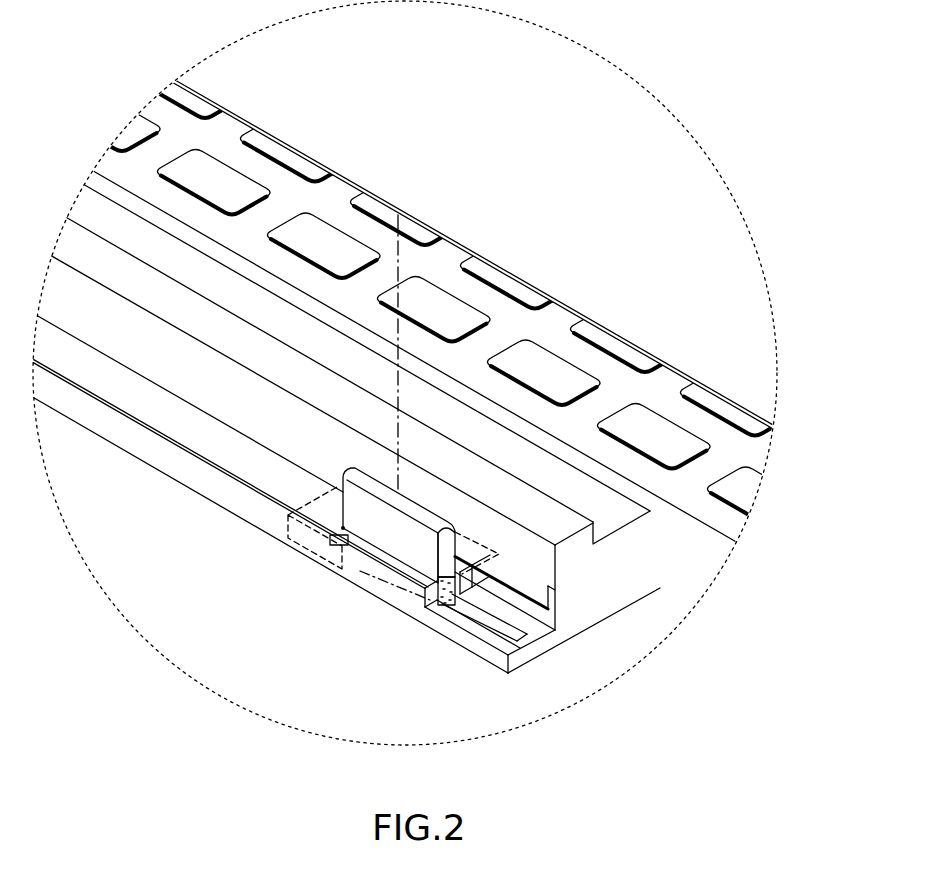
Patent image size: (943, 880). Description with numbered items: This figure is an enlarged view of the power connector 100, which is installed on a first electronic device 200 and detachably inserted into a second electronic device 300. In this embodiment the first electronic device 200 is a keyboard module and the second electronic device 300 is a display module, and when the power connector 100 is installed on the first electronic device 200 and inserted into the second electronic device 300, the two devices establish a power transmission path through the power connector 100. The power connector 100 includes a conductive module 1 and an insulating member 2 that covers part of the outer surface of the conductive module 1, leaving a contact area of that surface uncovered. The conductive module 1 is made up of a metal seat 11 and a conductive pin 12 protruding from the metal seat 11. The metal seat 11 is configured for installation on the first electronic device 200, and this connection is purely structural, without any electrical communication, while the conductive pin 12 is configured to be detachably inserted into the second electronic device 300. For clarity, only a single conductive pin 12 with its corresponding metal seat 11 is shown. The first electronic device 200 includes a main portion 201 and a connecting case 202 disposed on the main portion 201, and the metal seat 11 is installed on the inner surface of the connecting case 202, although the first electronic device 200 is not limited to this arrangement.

The second electronic device 300 is at (230, 76).
The first electronic device 200 is at (422, 440).
The main portion 201 is at (655, 598).
The connecting case 202 is at (540, 652).
The power connector 100 is at (380, 586).
The conductive module 1 is at (380, 559).
The metal seat 11 is at (383, 543).
The conductive pin 12 is at (383, 522).
The insulating member 2 is at (452, 600).